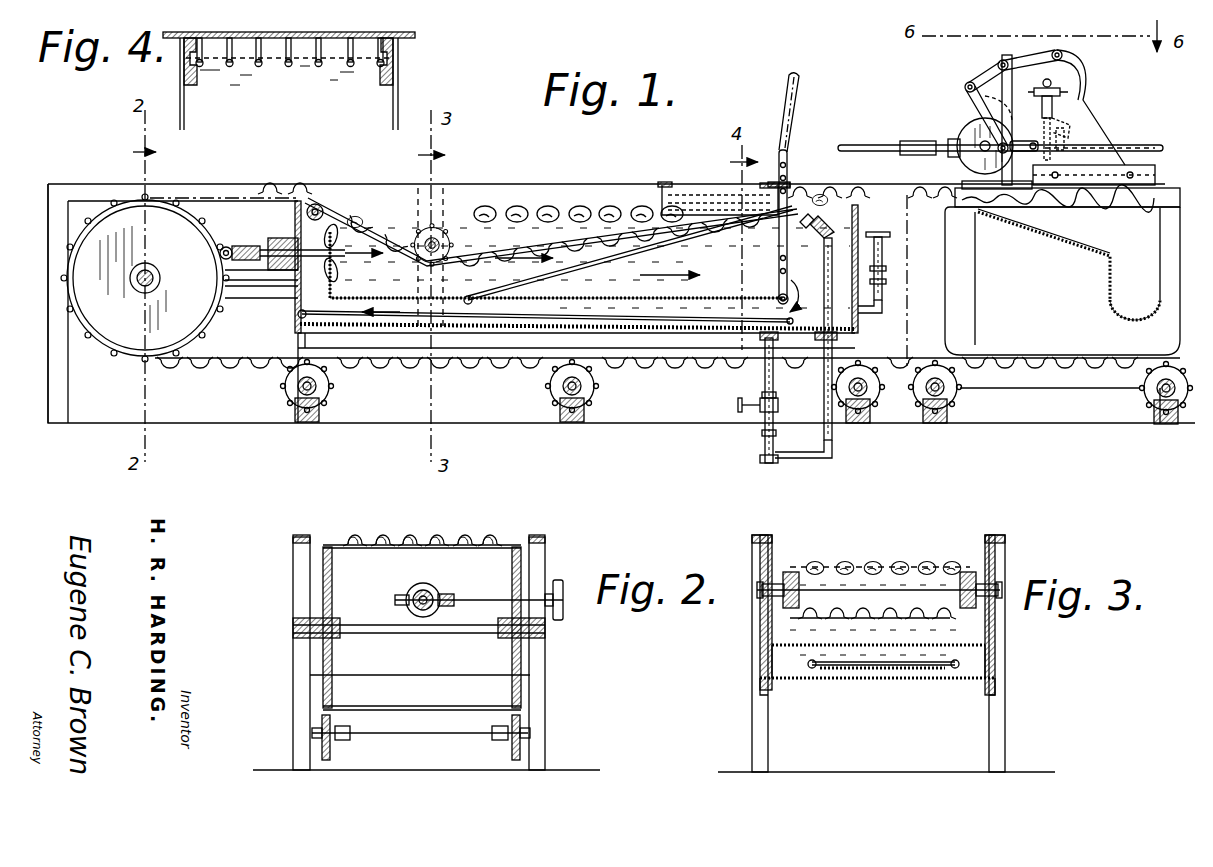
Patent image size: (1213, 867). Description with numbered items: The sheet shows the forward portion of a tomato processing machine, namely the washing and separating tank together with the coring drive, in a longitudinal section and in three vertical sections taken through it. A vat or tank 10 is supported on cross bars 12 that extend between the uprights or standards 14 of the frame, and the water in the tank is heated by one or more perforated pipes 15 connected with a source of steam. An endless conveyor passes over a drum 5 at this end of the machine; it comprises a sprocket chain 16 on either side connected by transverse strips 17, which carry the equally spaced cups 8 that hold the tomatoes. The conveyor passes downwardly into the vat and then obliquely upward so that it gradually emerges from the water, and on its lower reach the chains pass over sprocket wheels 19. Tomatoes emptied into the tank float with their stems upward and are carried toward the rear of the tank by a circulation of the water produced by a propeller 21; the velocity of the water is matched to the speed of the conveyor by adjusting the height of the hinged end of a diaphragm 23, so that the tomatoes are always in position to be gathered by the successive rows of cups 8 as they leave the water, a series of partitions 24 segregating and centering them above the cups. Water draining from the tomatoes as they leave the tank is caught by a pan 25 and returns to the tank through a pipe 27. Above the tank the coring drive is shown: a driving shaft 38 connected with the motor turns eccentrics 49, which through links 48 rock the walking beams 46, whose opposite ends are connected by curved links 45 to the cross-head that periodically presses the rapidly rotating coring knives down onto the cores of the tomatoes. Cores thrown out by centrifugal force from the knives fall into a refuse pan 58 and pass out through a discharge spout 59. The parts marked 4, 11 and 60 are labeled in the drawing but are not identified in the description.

In FIG. 1, the lever 4 is at (778, 240).
In FIG. 1, the drum 5 is at (114, 333).
In FIG. 2, the drum 5 is at (521, 669).
In FIG. 1, the cups 8 is at (458, 372).
In FIG. 2, the cups 8 is at (438, 528).
In FIG. 3, the cups 8 is at (850, 616).
In FIG. 1, the vat or tank 10 is at (297, 313).
In FIG. 3, the vat or tank 10 is at (945, 683).
In FIG. 1, the frame housing 11 is at (56, 404).
In FIG. 1, the cross bars 12 is at (560, 353).
In FIG. 1, the uprights or standards 14 is at (322, 408).
In FIG. 2, the uprights or standards 14 is at (300, 678).
In FIG. 3, the uprights or standards 14 is at (757, 726).
In FIG. 1, the perforated pipes 15 is at (663, 315).
In FIG. 3, the perforated pipes 15 is at (812, 670).
In FIG. 1, the sprocket chain 16 is at (254, 360).
In FIG. 2, the sprocket chain 16 is at (326, 545).
In FIG. 3, the transverse strips 17 is at (900, 616).
In FIG. 1, the sprocket wheels 19 is at (1150, 398).
In FIG. 1, the propeller 21 is at (297, 283).
In FIG. 1, the diaphragm 23 is at (700, 270).
In FIG. 3, the diaphragm 23 is at (965, 650).
In FIG. 4, the partitions 24 is at (297, 52).
In FIG. 1, the partitions 24 is at (645, 210).
In FIG. 1, the pan 25 is at (930, 220).
In FIG. 1, the pipe 27 is at (885, 263).
In FIG. 1, the driving shaft 38 is at (878, 146).
In FIG. 1, the curved links 45 is at (1083, 93).
In FIG. 1, the walking beams 46 is at (995, 67).
In FIG. 1, the links 48 is at (963, 90).
In FIG. 1, the eccentrics 49 is at (990, 148).
In FIG. 1, the refuse pan 58 is at (1058, 240).
In FIG. 1, the discharge spout 59 is at (1137, 319).
In FIG. 1, the plunger 60 is at (1040, 98).